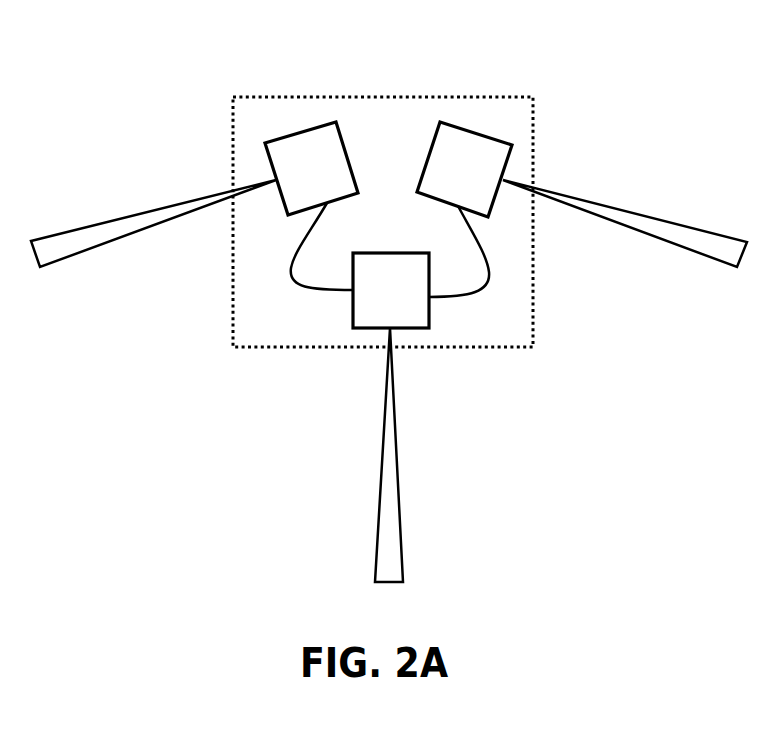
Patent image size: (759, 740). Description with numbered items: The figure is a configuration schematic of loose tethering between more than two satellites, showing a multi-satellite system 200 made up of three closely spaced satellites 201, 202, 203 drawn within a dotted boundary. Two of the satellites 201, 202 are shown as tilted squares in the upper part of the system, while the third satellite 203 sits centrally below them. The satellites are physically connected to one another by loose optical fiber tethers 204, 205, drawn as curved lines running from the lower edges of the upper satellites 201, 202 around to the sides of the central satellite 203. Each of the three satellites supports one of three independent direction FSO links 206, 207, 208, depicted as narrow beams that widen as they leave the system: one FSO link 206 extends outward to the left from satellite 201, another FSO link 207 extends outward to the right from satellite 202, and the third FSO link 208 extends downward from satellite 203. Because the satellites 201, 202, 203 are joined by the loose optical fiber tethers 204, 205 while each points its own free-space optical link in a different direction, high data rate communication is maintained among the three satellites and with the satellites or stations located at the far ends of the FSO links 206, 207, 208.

The multi-satellite system 200 is at (373, 95).
The satellite 201 is at (302, 127).
The satellite 202 is at (475, 127).
The satellite 203 is at (413, 332).
The loose optical fiber tether 204 is at (292, 290).
The loose optical fiber tether 205 is at (495, 280).
The FSO link 206 is at (152, 208).
The FSO link 207 is at (670, 213).
The FSO link 208 is at (375, 477).